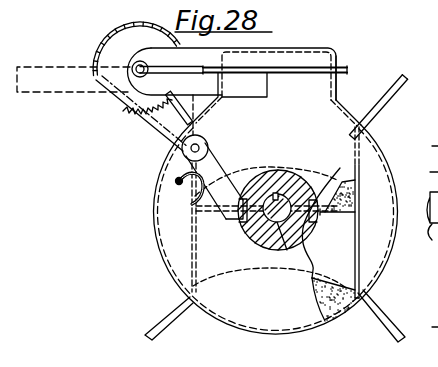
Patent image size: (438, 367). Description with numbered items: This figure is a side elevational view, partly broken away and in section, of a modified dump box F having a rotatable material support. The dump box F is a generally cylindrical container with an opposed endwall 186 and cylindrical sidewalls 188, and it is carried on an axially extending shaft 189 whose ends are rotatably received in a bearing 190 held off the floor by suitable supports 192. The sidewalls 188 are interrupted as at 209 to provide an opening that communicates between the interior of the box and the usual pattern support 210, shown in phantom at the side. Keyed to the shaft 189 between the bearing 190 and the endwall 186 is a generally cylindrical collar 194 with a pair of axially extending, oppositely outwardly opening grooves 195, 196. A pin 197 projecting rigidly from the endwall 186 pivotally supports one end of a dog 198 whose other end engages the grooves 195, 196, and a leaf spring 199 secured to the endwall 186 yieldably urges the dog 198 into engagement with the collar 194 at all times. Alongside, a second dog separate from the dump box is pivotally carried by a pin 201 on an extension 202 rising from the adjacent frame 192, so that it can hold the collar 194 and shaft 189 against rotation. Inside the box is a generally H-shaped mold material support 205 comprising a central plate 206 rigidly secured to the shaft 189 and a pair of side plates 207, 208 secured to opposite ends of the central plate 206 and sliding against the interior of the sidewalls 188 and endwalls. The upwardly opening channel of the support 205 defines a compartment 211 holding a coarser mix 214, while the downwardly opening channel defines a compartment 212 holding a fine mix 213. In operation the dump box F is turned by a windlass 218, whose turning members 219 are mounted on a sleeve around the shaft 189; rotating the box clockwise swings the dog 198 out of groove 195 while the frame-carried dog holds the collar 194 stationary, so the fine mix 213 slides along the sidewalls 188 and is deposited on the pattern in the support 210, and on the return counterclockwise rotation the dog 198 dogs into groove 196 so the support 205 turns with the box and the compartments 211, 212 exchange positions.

The dump box F is at (138, 220).
The endwall 186 is at (326, 149).
The cylindrical sidewalls 188 is at (367, 131).
The shaft 189 is at (345, 232).
The bearing 190 is at (426, 226).
The supports 192 is at (424, 328).
The collar 194 is at (265, 214).
The groove 195 is at (238, 188).
The groove 196 is at (322, 223).
The pin 197 is at (190, 150).
The dog 198 is at (210, 158).
The leaf spring 199 is at (196, 190).
The pin 201 is at (424, 147).
The extension 202 is at (423, 173).
The mold material support 205 is at (360, 219).
The central plate 206 is at (321, 214).
The side plate 207 is at (193, 262).
The side plate 208 is at (358, 274).
The interruption 209 is at (322, 91).
The pattern support 210 is at (63, 66).
The compartment 211 is at (348, 173).
The compartment 212 is at (333, 275).
The fine mix 213 is at (322, 309).
The coarser mix 214 is at (347, 191).
The windlass 218 is at (410, 62).
The windlass turning members 219 is at (390, 104).